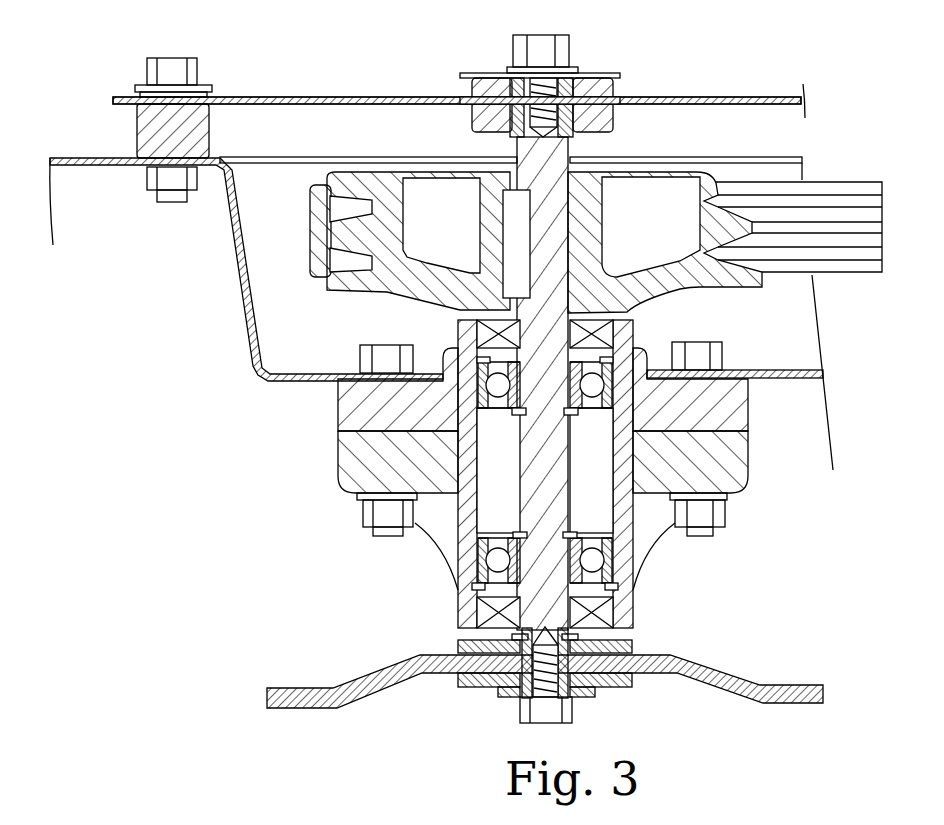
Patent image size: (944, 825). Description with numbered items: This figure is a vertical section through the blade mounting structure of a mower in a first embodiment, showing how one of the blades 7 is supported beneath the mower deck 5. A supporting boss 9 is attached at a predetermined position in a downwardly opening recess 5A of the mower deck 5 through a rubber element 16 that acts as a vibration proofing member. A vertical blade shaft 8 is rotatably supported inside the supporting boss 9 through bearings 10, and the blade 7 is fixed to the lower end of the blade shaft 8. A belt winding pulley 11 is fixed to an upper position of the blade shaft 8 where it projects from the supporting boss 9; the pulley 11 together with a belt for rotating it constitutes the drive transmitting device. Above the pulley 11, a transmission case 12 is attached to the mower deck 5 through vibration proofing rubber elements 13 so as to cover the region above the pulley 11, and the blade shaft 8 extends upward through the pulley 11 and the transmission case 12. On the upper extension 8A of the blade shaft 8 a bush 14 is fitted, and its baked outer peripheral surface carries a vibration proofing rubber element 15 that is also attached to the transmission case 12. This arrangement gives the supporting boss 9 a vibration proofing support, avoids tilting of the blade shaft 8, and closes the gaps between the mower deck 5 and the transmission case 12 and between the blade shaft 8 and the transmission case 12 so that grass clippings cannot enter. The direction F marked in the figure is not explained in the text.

The mower deck 5 is at (258, 316).
The downwardly opening recess 5A is at (370, 134).
The blade 7 is at (722, 668).
The blade shaft 8 is at (516, 506).
The upper extension 8A is at (488, 76).
The supporting boss 9 is at (337, 470).
The bearings 10 is at (617, 370).
The belt winding pulley 11 is at (745, 280).
The transmission case 12 is at (312, 96).
The vibration proofing rubber elements 13 is at (205, 124).
The bush 14 is at (605, 130).
The vibration proofing rubber element 15 is at (480, 122).
The rubber element 16 is at (337, 418).
The front direction F is at (96, 129).